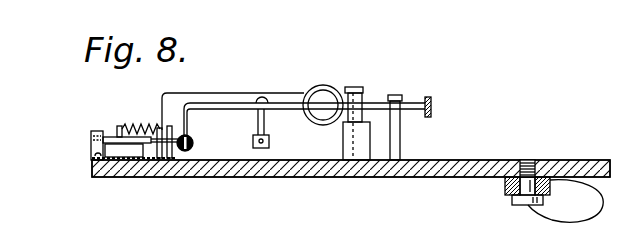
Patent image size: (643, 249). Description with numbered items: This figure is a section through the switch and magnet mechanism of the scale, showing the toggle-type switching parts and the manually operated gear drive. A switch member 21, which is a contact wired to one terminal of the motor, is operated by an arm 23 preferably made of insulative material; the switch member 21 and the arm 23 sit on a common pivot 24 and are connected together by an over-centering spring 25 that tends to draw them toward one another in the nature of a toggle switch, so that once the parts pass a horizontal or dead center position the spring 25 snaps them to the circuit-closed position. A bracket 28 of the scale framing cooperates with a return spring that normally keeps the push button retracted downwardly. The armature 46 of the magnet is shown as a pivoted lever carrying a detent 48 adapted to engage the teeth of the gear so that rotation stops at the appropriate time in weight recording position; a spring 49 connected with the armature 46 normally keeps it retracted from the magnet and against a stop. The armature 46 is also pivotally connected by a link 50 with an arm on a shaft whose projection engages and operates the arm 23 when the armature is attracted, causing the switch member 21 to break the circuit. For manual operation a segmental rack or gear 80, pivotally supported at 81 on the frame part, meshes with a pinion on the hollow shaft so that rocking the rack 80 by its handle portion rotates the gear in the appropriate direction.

The switch member 21 is at (112, 130).
The arm 23 is at (181, 151).
The pivot 24 is at (140, 152).
The over-centering spring 25 is at (133, 124).
The bracket 28 is at (182, 94).
The armature 46 is at (219, 111).
The detent 48 is at (431, 103).
The spring 49 is at (401, 115).
The link 50 is at (291, 134).
The segmental rack 80 is at (505, 182).
The pivot support 81 is at (528, 203).